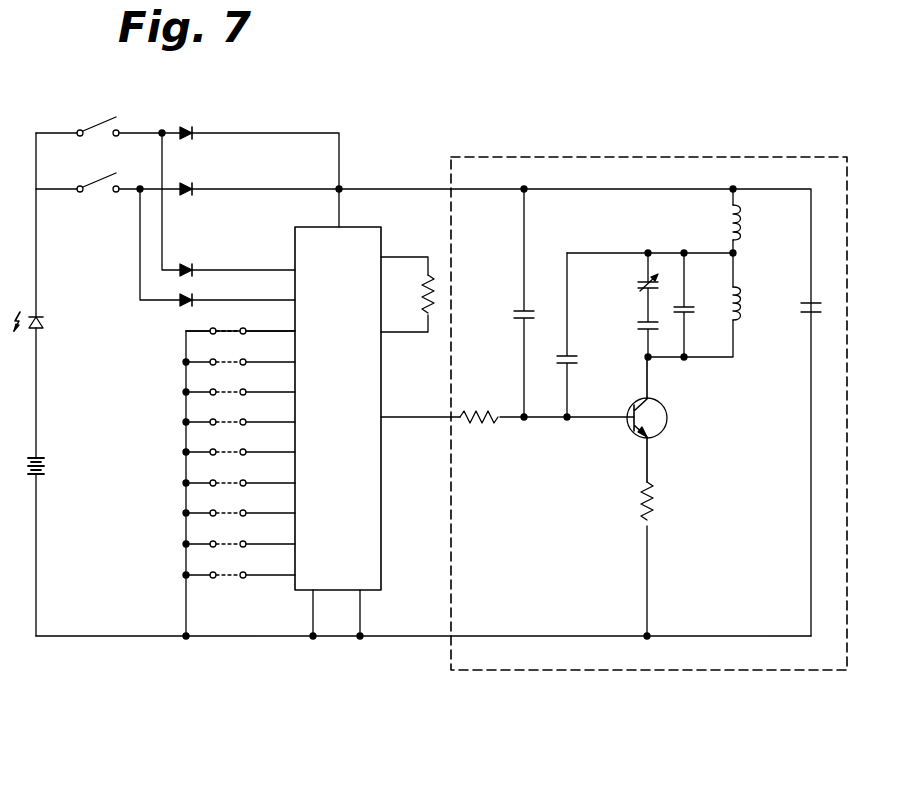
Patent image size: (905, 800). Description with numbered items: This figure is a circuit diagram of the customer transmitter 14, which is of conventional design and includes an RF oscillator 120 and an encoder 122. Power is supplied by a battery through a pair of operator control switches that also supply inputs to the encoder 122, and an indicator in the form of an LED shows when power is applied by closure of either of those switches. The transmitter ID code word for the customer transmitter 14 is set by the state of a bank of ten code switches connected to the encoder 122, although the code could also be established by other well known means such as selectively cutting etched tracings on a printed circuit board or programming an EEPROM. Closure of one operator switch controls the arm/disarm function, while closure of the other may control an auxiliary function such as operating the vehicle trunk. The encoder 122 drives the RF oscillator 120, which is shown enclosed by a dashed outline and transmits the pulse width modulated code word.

The customer transmitter 14 is at (331, 667).
The RF oscillator 120 is at (688, 157).
The encoder 122 is at (381, 563).